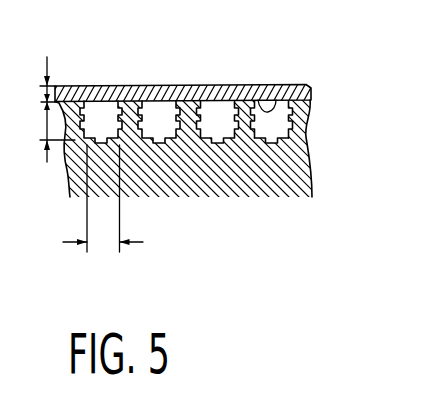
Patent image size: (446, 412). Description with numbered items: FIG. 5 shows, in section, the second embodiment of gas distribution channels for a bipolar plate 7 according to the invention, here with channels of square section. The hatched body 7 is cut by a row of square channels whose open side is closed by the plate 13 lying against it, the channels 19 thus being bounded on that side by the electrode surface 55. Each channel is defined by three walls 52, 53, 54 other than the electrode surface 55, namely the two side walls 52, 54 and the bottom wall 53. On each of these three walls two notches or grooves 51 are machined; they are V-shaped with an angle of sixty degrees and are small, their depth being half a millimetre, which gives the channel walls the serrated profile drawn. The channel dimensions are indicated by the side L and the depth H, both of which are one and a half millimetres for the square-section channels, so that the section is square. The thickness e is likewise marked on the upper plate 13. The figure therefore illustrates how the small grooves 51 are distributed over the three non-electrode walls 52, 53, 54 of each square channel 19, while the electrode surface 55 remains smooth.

The electrode body 7 is at (160, 172).
The plate / coating layer 13 is at (118, 92).
The holes 19 is at (215, 114).
The notches or grooves 51 is at (103, 142).
The channel wall 52 is at (253, 130).
The channel wall 53 is at (276, 137).
The channel wall 54 is at (295, 112).
The electrode surface 55 is at (258, 100).
The plate thickness e is at (45, 109).
The depth H is at (25, 126).
The side L is at (103, 198).